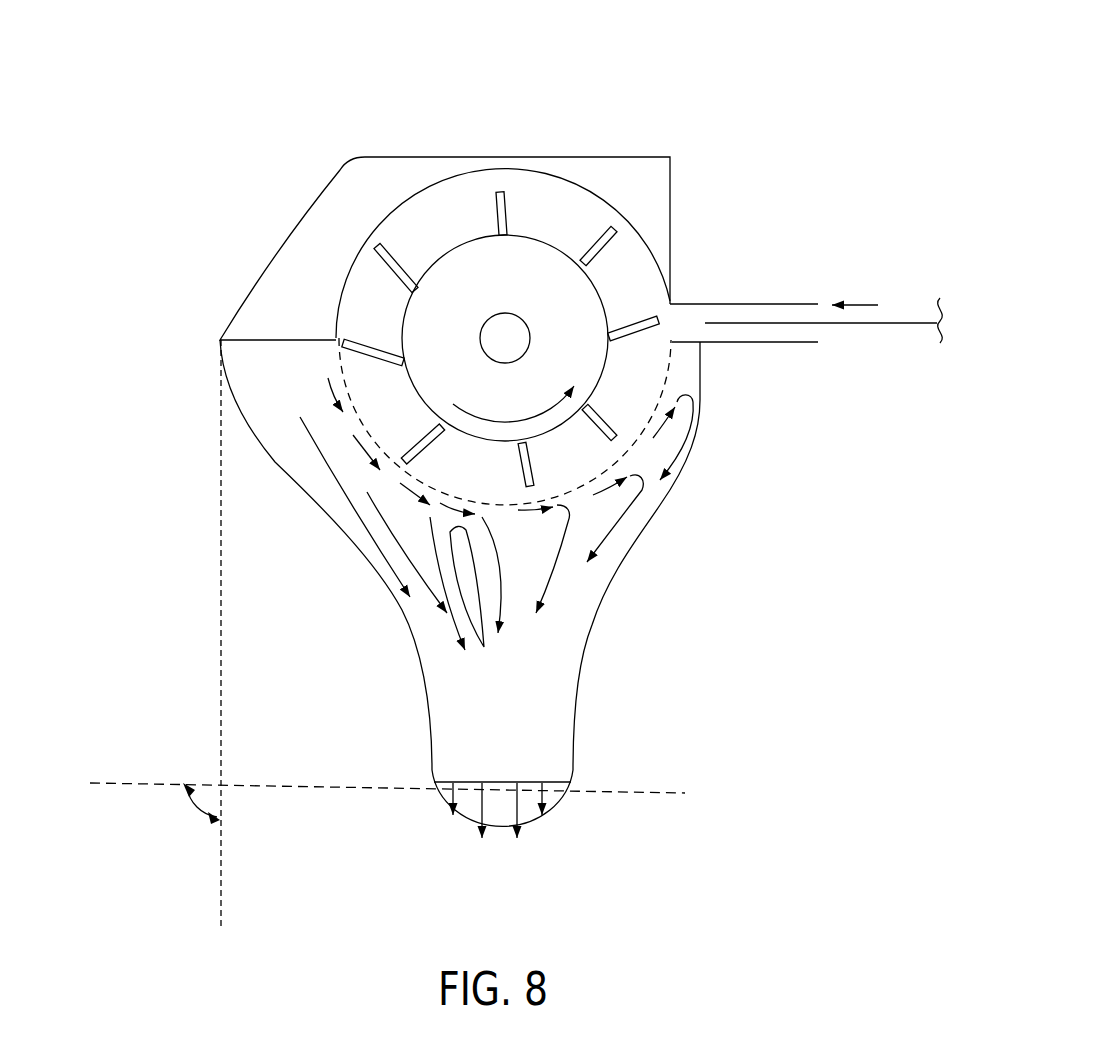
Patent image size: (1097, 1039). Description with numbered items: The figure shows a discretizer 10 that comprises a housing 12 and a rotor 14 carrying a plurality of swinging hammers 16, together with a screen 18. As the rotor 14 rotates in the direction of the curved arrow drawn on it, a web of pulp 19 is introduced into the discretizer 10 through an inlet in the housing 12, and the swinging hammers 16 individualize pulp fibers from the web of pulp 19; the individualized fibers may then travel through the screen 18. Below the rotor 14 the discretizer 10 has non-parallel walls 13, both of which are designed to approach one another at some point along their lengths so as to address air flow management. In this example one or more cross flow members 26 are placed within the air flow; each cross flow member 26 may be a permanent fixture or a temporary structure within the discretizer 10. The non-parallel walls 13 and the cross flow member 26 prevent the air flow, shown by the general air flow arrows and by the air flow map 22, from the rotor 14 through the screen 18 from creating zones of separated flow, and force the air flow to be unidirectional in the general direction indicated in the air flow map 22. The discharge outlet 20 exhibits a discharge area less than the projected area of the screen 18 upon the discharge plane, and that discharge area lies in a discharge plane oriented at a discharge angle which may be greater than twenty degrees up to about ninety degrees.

The discretizer 10 is at (714, 142).
The housing 12 is at (611, 157).
The non-parallel walls 13 is at (405, 612).
The rotor 14 is at (541, 268).
The swinging hammers 16 is at (608, 248).
The screen 18 is at (677, 368).
The web of pulp 19 is at (898, 323).
The discharge outlet 20 is at (467, 794).
The air flow map 22 is at (552, 796).
The cross flow member 26 is at (473, 560).